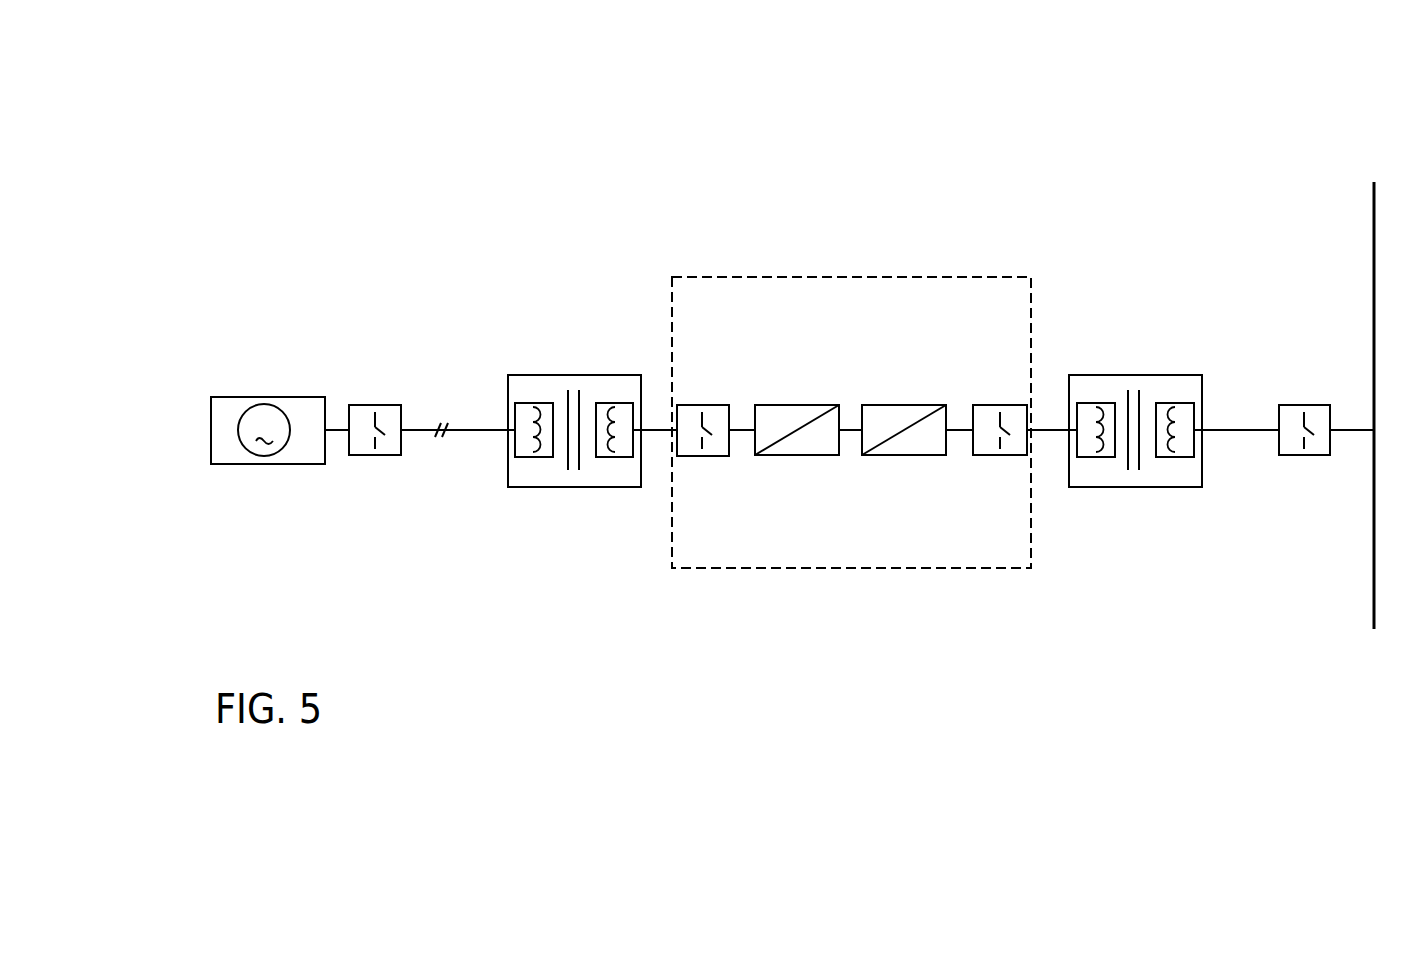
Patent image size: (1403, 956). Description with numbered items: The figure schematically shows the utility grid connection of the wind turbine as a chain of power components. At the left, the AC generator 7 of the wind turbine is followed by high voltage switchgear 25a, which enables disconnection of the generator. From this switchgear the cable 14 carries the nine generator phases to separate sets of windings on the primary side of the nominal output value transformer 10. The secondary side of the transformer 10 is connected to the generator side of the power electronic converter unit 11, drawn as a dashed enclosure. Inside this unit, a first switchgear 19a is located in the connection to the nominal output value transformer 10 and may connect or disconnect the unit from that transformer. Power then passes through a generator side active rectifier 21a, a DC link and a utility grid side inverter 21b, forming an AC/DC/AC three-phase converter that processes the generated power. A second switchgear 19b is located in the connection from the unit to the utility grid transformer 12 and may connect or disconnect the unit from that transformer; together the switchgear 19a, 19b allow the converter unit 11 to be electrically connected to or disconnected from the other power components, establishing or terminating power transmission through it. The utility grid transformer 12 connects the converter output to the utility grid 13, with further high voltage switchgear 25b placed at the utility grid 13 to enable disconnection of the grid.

The AC generator 7 is at (292, 397).
The high voltage switchgear 25a is at (364, 405).
The cable 14 is at (419, 428).
The nominal output value transformer 10 is at (594, 375).
The power electronic converter unit 11 is at (1032, 305).
The first switchgear 19a is at (710, 405).
The generator side active rectifier 21a is at (794, 457).
The utility grid side inverter 21b is at (900, 457).
The second switchgear 19b is at (988, 405).
The utility grid transformer 12 is at (1163, 375).
The high voltage switchgear 25b is at (1316, 405).
The utility grid 13 is at (1373, 213).